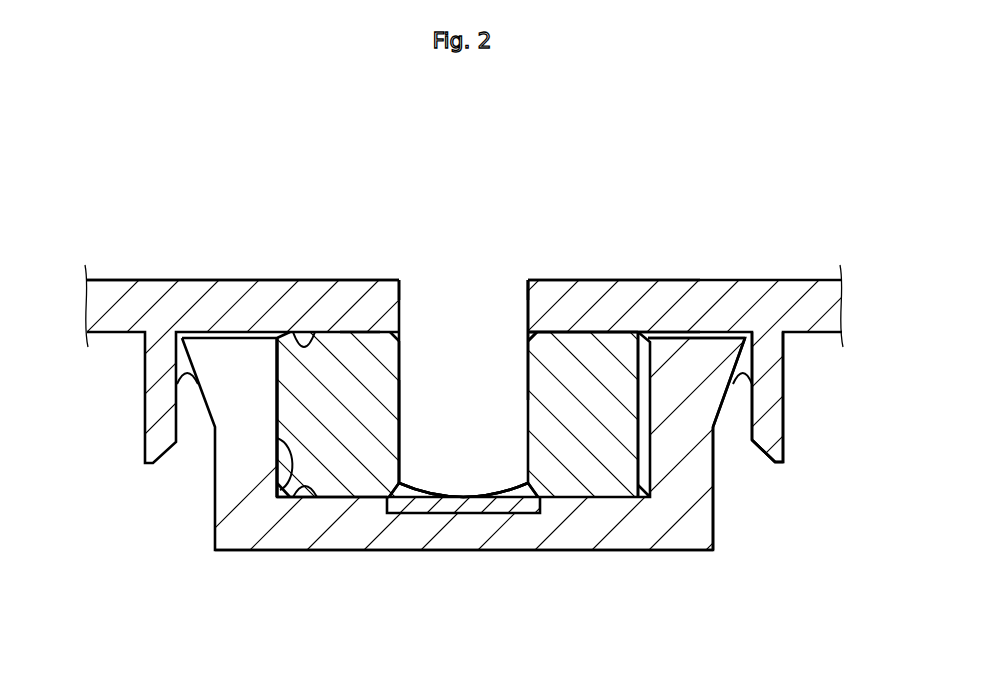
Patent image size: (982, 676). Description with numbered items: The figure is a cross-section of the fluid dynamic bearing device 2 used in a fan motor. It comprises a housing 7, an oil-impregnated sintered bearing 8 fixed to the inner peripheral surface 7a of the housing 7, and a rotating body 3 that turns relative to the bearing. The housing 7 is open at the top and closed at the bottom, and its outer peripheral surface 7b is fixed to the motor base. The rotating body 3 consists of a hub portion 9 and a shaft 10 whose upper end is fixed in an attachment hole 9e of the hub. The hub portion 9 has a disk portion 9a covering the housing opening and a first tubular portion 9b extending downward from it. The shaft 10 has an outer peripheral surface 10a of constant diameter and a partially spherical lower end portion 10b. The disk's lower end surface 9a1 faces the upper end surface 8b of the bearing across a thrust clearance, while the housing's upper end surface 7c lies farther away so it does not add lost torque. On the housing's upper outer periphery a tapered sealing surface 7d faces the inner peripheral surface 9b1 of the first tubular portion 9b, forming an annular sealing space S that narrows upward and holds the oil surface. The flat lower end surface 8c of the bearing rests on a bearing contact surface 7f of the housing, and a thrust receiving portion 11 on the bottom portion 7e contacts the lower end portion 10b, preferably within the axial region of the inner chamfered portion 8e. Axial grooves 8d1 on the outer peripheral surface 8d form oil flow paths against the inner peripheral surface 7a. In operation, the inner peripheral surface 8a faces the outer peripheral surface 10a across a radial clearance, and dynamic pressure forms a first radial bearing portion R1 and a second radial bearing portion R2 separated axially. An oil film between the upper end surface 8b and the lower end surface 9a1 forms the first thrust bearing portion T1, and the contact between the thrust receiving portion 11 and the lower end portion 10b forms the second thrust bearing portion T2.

The fluid dynamic bearing device 2 is at (355, 181).
The rotating body 3 is at (473, 273).
The housing 7 is at (693, 540).
The inner peripheral surface 7a is at (277, 405).
The outer peripheral surface 7b is at (713, 521).
The upper end surface 7c is at (722, 335).
The tapered sealing surface 7d is at (722, 401).
The bottom portion 7e is at (447, 540).
The bearing contact surface 7f is at (297, 500).
The oil-impregnated sintered bearing 8 is at (597, 483).
The inner peripheral surface 8a is at (400, 408).
The upper end surface 8b is at (617, 330).
The lower end surface 8c is at (333, 497).
The outer peripheral surface 8d is at (277, 403).
The axial groove 8d1 is at (638, 443).
The inner chamfered portion 8e is at (418, 496).
The hub portion 9 is at (673, 290).
The disk portion 9a is at (601, 307).
The lower end surface 9a1 is at (296, 333).
The first tubular portion 9b is at (770, 417).
The inner peripheral surface 9b1 is at (778, 453).
The attachment hole 9e is at (527, 307).
The shaft 10 is at (440, 310).
The outer peripheral surface 10a is at (400, 400).
The lower end portion 10b is at (512, 498).
The thrust receiving portion 11 is at (462, 507).
The sealing space S is at (752, 387).
The first thrust bearing portion T1 is at (357, 328).
The second thrust bearing portion T2 is at (467, 491).
The first radial bearing portion R1 is at (534, 377).
The second radial bearing portion R2 is at (534, 456).